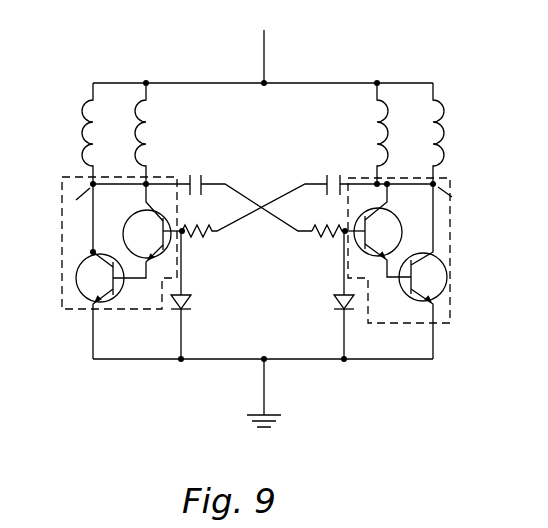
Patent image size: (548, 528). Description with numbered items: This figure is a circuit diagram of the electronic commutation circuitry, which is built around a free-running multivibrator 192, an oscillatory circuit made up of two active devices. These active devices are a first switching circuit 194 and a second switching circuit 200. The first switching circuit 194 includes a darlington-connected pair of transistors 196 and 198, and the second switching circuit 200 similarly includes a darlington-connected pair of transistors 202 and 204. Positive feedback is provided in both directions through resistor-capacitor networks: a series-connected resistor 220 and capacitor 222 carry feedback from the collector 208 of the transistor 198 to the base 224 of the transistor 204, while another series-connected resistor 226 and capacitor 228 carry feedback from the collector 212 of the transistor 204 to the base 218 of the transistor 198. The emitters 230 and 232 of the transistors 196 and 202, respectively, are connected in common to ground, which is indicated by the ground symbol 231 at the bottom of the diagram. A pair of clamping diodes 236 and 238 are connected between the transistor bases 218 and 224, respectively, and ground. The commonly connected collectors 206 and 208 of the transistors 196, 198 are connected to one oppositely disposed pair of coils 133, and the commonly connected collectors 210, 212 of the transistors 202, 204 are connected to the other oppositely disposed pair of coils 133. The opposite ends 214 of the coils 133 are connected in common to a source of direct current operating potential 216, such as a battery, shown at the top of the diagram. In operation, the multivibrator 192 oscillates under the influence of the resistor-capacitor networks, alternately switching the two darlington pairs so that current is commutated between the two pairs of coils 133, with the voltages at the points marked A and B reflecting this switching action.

The free-running multivibrator 192 is at (98, 368).
The first switching circuit 194 is at (55, 272).
The transistor 196 is at (82, 271).
The transistor 198 is at (160, 257).
The second switching circuit 200 is at (452, 214).
The transistor 202 is at (429, 271).
The transistor 204 is at (362, 251).
The collector 206 is at (93, 252).
The collector 208 is at (164, 234).
The collector 210 is at (367, 239).
The collector 212 is at (389, 194).
The opposite ends of coils 214 is at (94, 82).
The source of direct current operating potential 216 is at (264, 37).
The base 218 is at (184, 228).
The resistor 220 is at (206, 237).
The capacitor 222 is at (323, 183).
The base 224 is at (344, 229).
The resistor 226 is at (330, 251).
The capacitor 228 is at (195, 178).
The emitter 230 is at (118, 316).
The ground 231 is at (266, 415).
The emitter 232 is at (434, 305).
The clamping diode 236 is at (192, 304).
The clamping diode 238 is at (336, 306).
The coils 133 is at (86, 124).